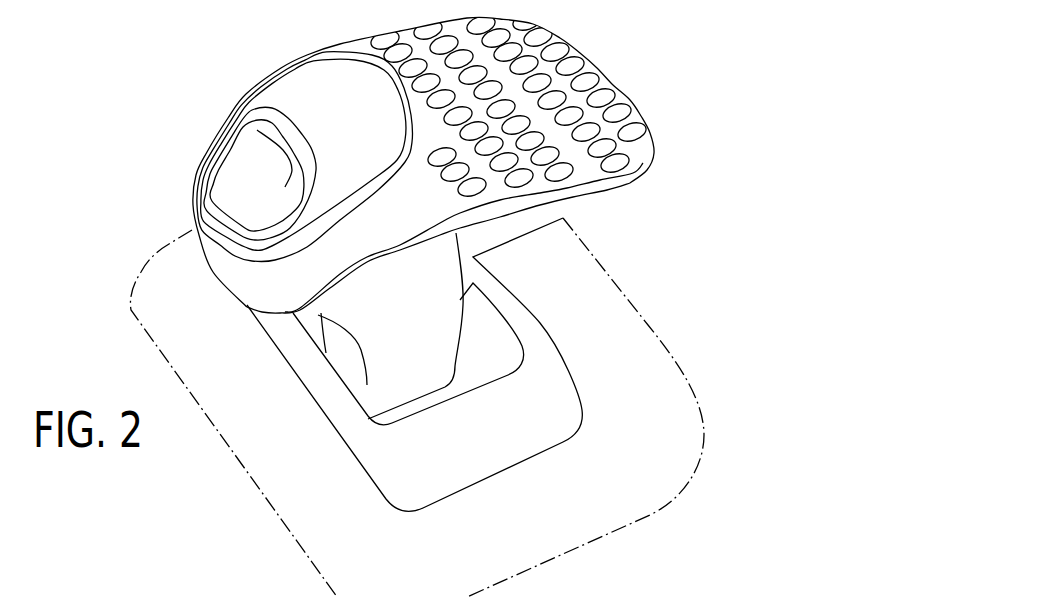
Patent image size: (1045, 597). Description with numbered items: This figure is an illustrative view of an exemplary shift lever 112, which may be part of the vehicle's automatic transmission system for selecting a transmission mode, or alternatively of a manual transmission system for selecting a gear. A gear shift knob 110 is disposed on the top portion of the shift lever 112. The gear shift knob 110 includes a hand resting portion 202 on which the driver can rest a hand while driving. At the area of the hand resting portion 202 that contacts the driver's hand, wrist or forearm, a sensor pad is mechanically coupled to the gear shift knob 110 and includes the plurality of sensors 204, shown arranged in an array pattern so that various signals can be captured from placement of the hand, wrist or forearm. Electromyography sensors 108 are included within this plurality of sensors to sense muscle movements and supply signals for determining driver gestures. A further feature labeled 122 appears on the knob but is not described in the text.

The electromyography sensors 108 is at (573, 67).
The gear shift knob 110 is at (213, 200).
The shift lever 112 is at (295, 345).
The shift knob body 122 is at (632, 146).
The hand resting portion 202 is at (510, 200).
The plurality of sensors 204 is at (577, 200).